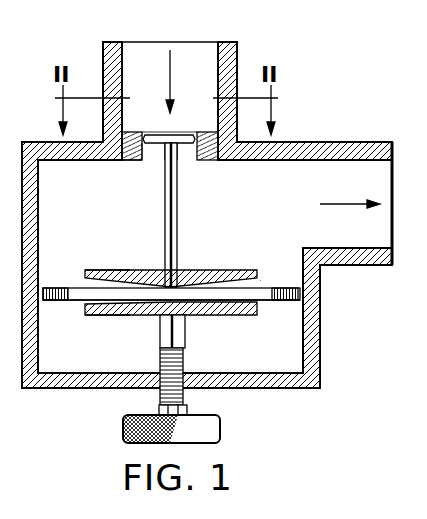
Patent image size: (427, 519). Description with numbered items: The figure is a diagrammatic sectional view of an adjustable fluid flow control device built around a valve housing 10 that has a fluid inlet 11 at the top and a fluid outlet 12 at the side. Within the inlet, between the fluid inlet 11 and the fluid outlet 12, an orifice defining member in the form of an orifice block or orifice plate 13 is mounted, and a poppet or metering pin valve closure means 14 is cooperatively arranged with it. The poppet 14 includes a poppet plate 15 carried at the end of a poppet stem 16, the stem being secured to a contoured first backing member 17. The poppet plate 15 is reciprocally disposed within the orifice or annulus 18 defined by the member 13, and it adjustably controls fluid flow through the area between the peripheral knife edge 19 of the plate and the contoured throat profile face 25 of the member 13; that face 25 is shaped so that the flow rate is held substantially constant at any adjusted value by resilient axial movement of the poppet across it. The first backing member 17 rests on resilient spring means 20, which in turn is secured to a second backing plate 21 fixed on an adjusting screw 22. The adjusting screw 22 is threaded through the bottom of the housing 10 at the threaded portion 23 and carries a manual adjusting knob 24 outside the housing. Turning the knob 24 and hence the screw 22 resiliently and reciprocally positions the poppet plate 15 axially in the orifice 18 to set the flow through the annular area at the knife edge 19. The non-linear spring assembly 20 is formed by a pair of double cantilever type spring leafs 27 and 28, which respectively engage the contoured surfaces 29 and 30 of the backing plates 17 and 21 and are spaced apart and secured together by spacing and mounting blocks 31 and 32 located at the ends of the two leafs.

The valve housing 10 is at (312, 363).
The fluid inlet 11 is at (196, 58).
The fluid outlet 12 is at (374, 229).
The orifice plate 13 is at (208, 160).
The poppet 14 is at (151, 126).
The poppet plate 15 is at (179, 144).
The poppet stem 16 is at (170, 221).
The first backing member 17 is at (137, 277).
The orifice 18 is at (156, 162).
The peripheral knife edge 19 is at (180, 135).
The resilient spring means 20 is at (279, 266).
The second backing plate 21 is at (208, 316).
The adjusting screw 22 is at (163, 336).
The threaded portion of housing 23 is at (200, 387).
The adjusting knob 24 is at (122, 428).
The face of the member 25 is at (150, 157).
The double cantilever spring leaf 27 is at (80, 288).
The double cantilever spring leaf 28 is at (77, 301).
The contoured surface 29 is at (98, 271).
The contoured surface 30 is at (110, 316).
The spacing and mounting block 31 is at (59, 301).
The spacing and mounting block 32 is at (282, 301).